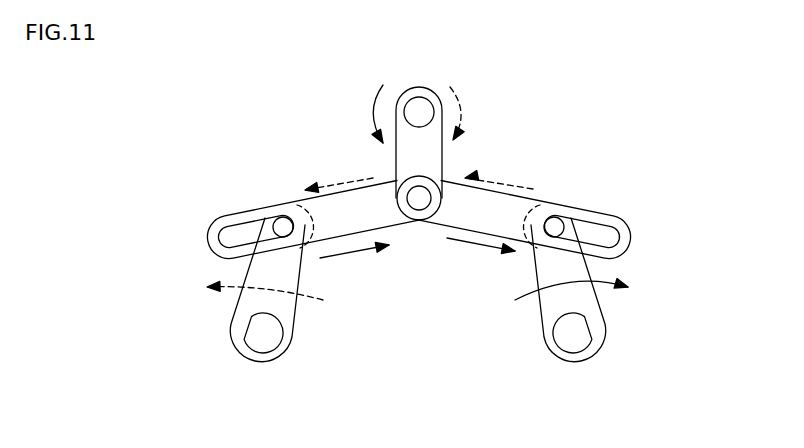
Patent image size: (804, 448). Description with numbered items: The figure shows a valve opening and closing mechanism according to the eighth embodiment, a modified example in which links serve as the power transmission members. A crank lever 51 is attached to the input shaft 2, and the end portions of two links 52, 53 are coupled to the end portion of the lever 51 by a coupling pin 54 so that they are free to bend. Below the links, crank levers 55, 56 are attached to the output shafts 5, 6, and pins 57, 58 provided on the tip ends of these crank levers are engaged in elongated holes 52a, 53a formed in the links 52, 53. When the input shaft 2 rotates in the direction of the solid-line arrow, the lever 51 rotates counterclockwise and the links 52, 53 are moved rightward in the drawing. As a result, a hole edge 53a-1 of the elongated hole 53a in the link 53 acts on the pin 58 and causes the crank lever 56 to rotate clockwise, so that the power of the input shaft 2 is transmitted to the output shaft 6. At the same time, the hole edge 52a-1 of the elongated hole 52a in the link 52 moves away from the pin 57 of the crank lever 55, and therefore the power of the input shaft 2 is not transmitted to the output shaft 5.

The input shaft 2 is at (419, 108).
The output shaft 5 is at (267, 342).
The output shaft 6 is at (578, 345).
The crank lever 51 is at (433, 158).
The link 52 is at (310, 213).
The elongated hole 52a is at (230, 233).
The hole edge 52a-1 is at (303, 240).
The link 53 is at (517, 213).
The elongated hole 53a is at (608, 238).
The hole edge 53a-1 is at (533, 247).
The coupling pin 54 is at (419, 200).
The crank lever 55 is at (289, 308).
The crank lever 56 is at (593, 308).
The pin 57 is at (283, 226).
The pin 58 is at (556, 225).